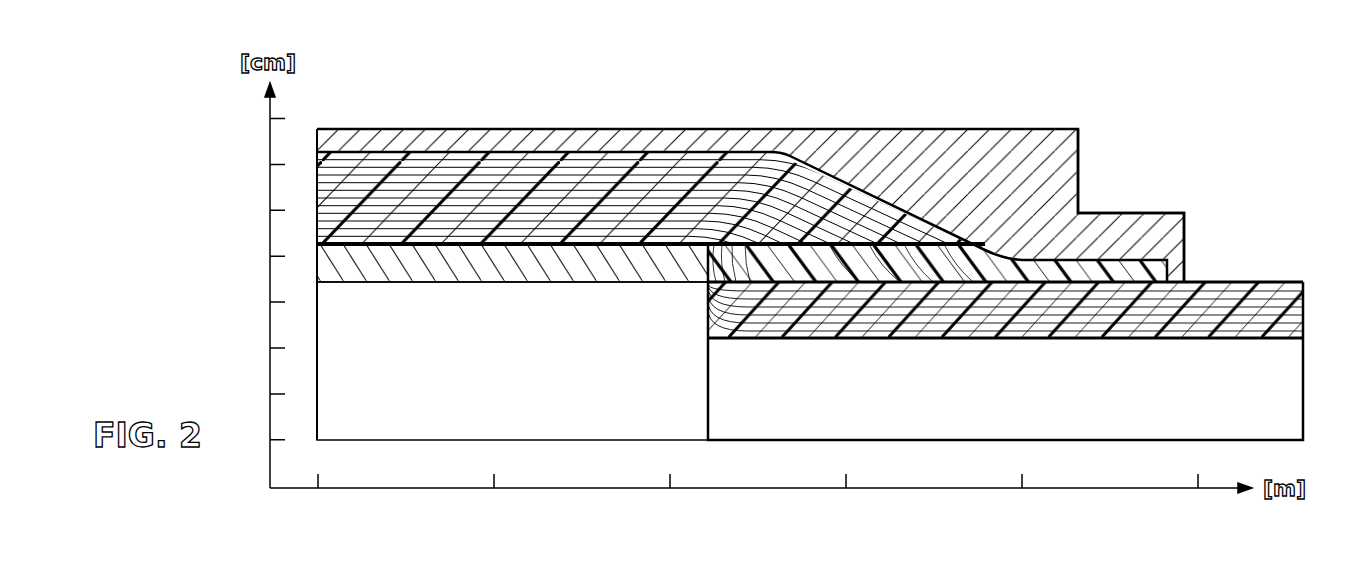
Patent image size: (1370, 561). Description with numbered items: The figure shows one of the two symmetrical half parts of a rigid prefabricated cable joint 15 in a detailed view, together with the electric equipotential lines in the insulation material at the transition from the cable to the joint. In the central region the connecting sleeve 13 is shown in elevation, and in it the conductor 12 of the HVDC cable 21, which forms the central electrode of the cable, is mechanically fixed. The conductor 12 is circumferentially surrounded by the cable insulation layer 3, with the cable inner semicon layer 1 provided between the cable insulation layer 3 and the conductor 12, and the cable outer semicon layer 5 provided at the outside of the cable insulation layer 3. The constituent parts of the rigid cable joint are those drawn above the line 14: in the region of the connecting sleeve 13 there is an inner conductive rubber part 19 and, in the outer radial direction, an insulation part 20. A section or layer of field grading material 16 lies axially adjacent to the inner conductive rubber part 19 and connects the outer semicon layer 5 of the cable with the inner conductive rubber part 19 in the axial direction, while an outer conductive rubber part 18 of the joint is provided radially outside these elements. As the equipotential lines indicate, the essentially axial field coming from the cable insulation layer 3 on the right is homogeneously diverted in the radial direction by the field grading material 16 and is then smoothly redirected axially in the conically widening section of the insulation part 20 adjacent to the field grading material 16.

The cable inner semicon layer 1 is at (1168, 342).
The cable insulation layer 3 is at (897, 314).
The cable outer semicon layer 5 is at (1060, 278).
The conductor 12 is at (1016, 402).
The connecting sleeve 13 is at (483, 390).
The line 14 is at (400, 289).
The prefabricated cable joint 15 is at (1096, 168).
The field grading material 16 is at (808, 263).
The outer conductive rubber part 18 is at (934, 177).
The inner conductive rubber part 19 is at (593, 267).
The insulation part 20 is at (513, 187).
The HVDC cable 21 is at (1257, 268).